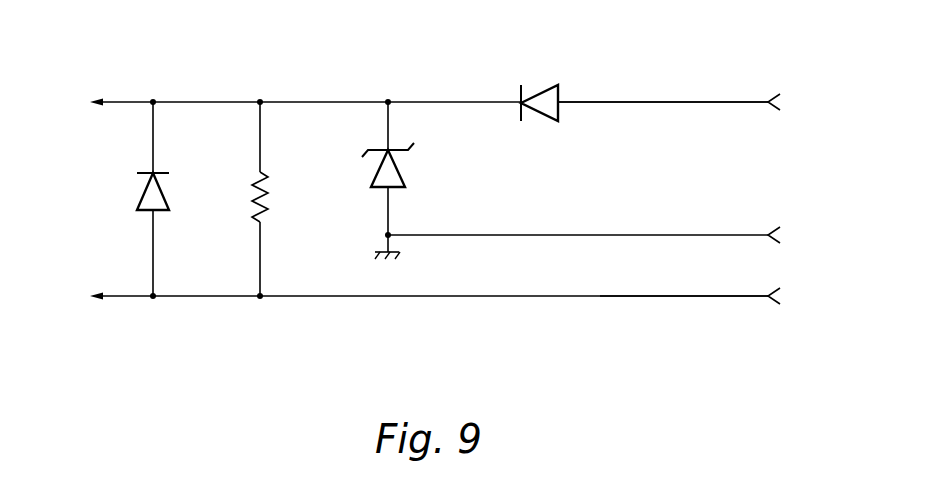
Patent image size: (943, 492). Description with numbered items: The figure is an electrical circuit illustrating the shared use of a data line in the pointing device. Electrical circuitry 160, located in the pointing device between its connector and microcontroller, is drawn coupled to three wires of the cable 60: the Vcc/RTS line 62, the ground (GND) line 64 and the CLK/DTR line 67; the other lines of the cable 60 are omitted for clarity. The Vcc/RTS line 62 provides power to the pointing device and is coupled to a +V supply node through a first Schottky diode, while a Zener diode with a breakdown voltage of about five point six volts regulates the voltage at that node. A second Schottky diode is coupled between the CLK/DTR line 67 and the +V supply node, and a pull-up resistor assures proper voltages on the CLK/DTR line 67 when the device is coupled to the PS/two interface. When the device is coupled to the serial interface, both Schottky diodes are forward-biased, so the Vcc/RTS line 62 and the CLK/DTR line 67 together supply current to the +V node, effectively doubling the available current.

The electrical circuitry 160 is at (350, 60).
The cable 60 is at (783, 48).
The Vcc/RTS line 62 is at (747, 106).
The ground (GND) line 64 is at (688, 235).
The CLK/DTR line 67 is at (693, 298).